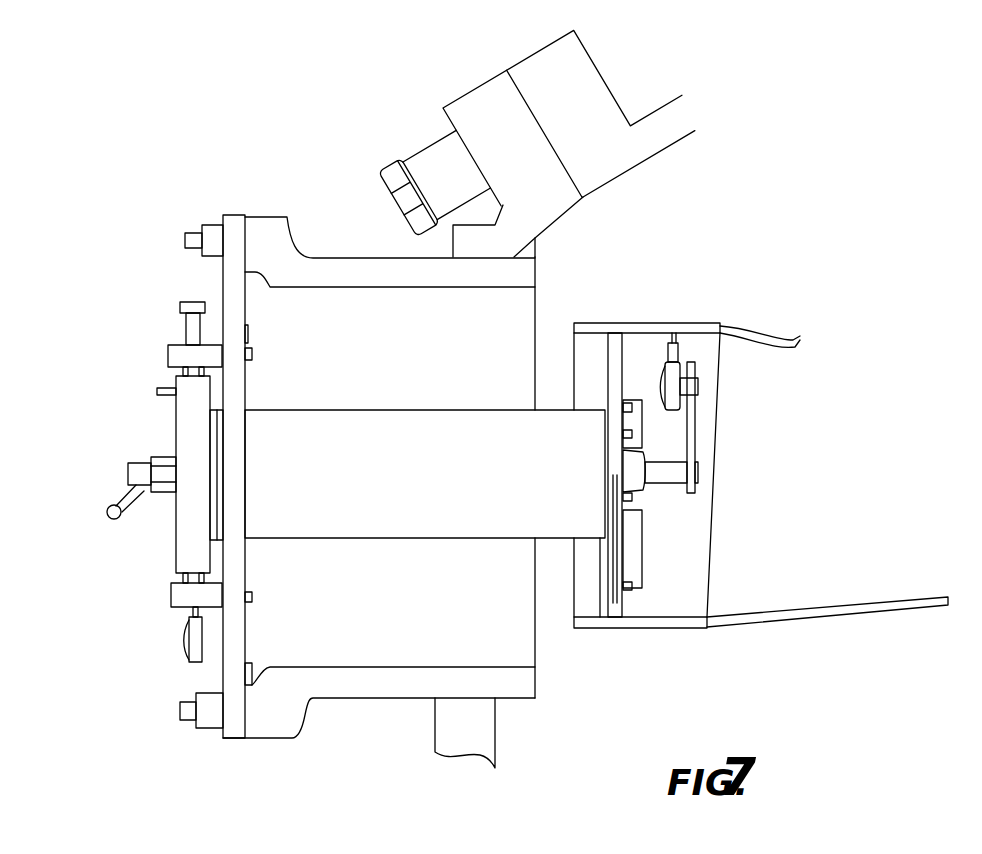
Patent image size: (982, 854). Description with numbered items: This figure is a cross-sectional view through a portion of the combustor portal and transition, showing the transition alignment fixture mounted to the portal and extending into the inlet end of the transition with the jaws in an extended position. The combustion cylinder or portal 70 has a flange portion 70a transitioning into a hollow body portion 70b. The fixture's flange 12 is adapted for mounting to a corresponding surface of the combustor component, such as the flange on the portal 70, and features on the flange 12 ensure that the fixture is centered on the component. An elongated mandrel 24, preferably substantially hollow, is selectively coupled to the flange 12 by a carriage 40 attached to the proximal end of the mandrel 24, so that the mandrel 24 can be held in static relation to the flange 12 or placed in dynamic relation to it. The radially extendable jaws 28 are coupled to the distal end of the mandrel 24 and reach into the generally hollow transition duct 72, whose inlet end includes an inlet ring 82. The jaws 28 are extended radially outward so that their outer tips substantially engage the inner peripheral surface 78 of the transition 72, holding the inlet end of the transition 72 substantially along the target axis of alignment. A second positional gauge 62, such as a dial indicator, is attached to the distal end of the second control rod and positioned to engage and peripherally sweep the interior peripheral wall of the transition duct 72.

The flange 12 is at (235, 215).
The combustion cylinder or portal 70 is at (462, 395).
The flange portion 70a is at (263, 717).
The hollow body portion 70b is at (312, 265).
The carriage 40 is at (192, 429).
The elongated mandrel 24 is at (470, 488).
The radially extendable jaws 28 is at (640, 345).
The inner peripheral surface 78 is at (707, 340).
The second positional gauge 62 is at (698, 383).
The inlet ring 82 is at (695, 630).
The transition duct 72 is at (848, 615).